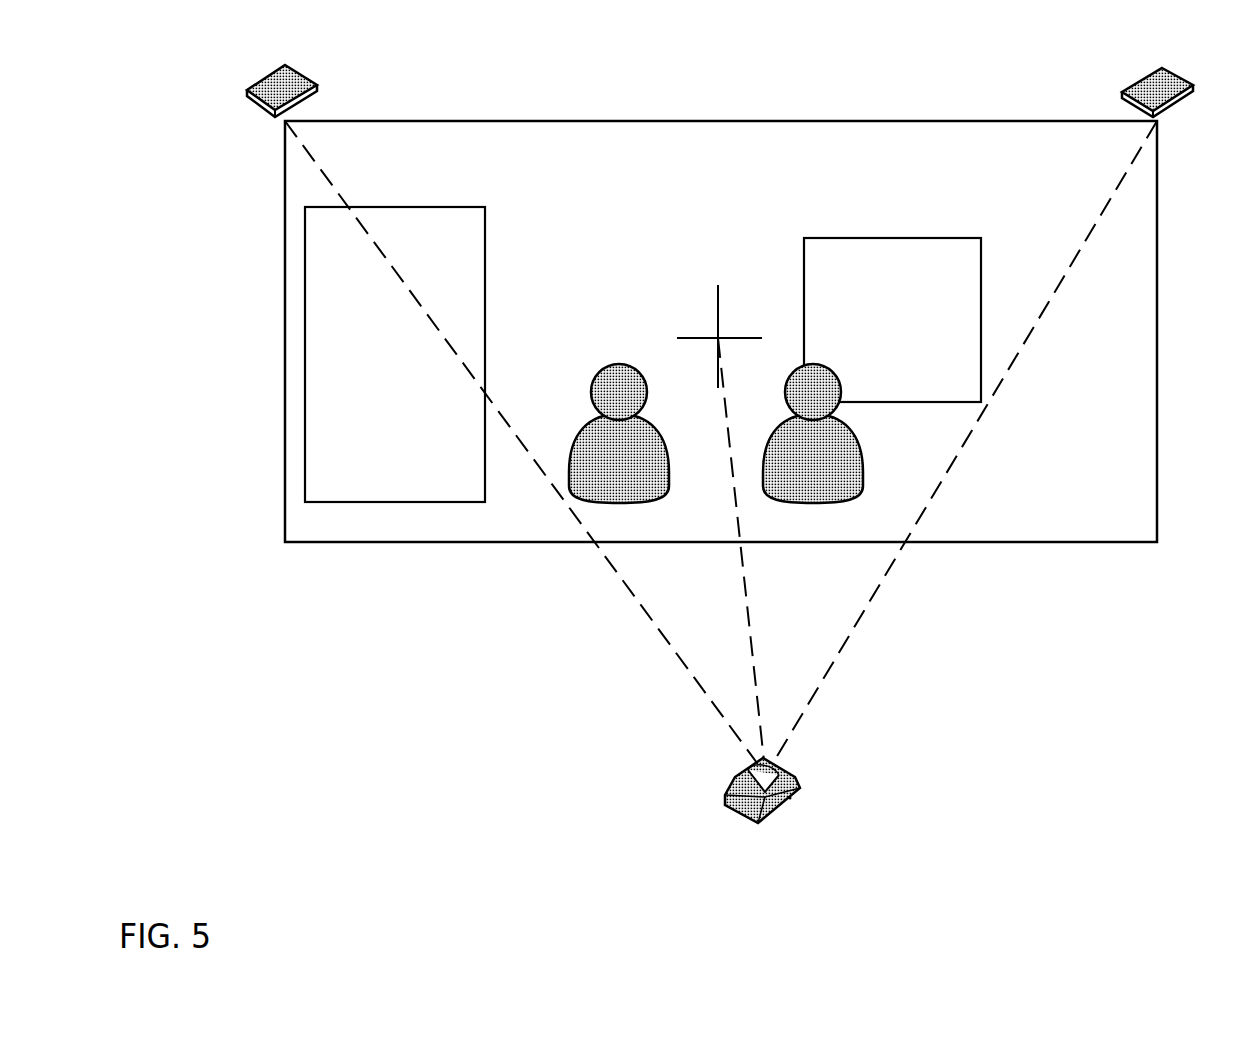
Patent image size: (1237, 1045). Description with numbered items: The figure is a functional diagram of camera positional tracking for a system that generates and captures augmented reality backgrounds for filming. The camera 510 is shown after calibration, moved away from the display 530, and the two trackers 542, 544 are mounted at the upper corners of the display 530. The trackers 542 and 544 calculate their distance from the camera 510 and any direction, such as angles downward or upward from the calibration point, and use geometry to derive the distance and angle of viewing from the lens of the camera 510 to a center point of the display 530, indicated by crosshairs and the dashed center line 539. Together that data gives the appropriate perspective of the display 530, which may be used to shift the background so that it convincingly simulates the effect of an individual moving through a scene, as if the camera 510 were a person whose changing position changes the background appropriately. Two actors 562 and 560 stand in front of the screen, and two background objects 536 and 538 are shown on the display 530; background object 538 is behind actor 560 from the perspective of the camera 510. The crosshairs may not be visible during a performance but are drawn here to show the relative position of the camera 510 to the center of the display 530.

The camera 510 is at (721, 489).
The display 530 is at (721, 331).
The background object 536 is at (395, 354).
The background object 538 is at (892, 320).
The camera line of sight / center line 539 is at (745, 596).
The tracker 542 is at (293, 71).
The tracker 544 is at (1158, 71).
The actor 560 is at (813, 449).
The actor 562 is at (619, 449).